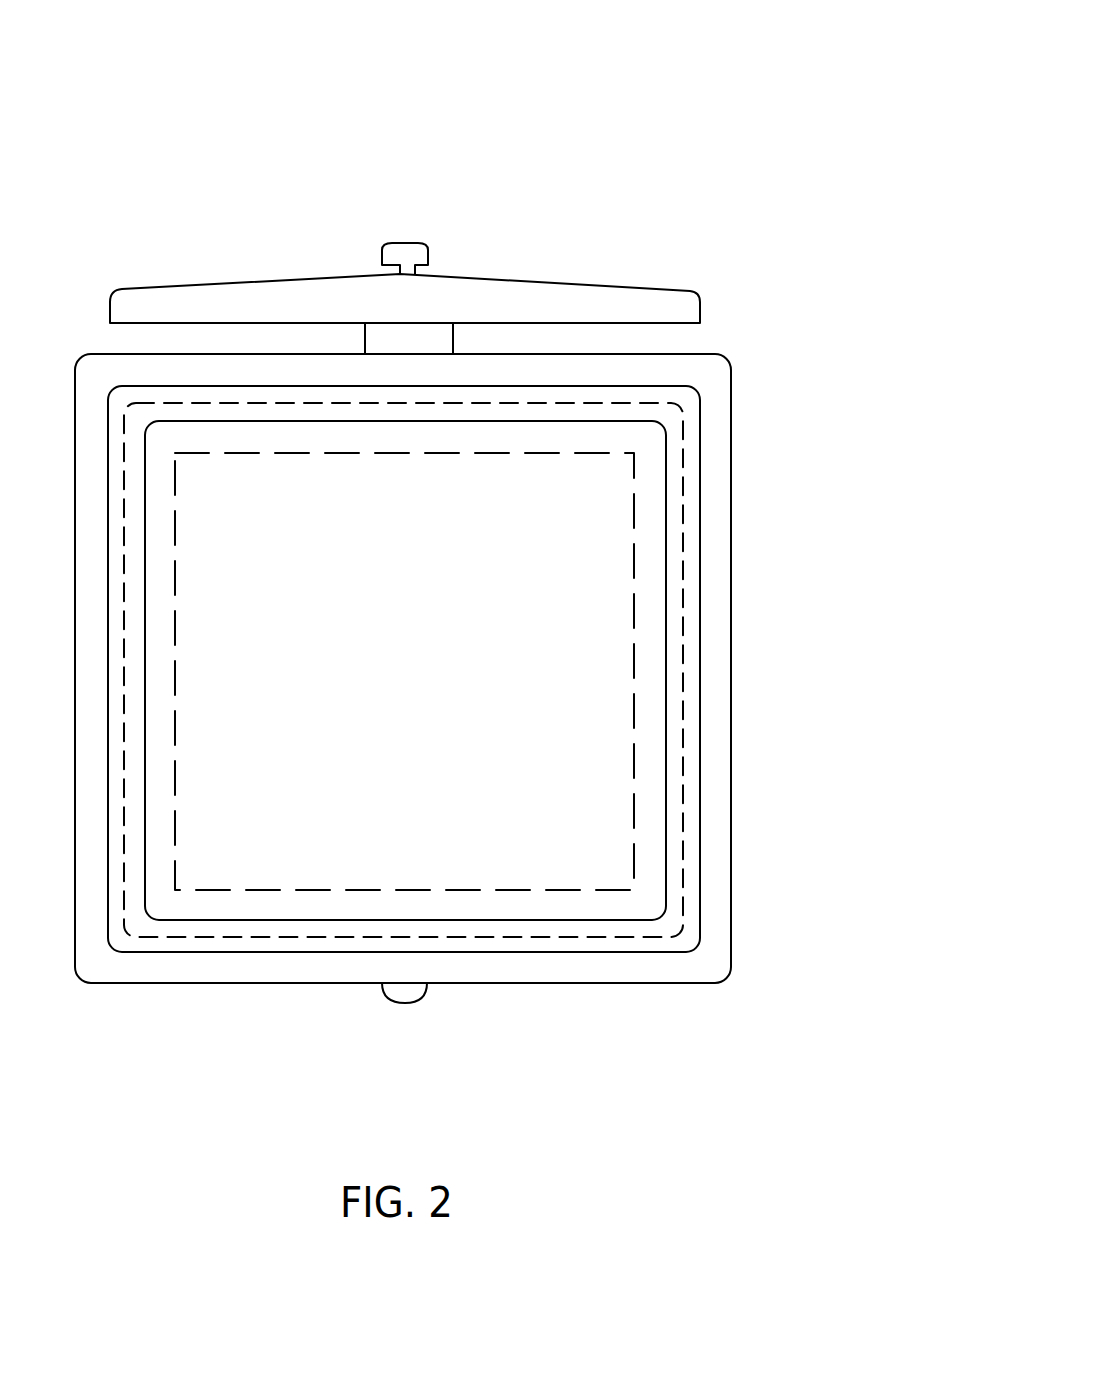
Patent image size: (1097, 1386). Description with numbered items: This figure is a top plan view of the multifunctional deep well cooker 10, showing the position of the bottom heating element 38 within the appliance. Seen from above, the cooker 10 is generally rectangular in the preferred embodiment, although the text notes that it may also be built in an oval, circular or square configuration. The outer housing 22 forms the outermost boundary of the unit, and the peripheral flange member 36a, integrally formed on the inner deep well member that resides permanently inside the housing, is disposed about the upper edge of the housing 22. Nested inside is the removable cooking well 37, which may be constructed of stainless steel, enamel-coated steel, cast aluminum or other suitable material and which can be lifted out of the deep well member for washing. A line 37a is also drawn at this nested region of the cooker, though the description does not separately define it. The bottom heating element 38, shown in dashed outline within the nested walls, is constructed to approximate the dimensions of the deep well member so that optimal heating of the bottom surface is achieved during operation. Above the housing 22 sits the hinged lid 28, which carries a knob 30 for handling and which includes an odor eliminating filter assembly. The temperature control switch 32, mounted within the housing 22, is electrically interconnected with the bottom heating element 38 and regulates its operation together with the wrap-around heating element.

The multifunctional deep well cooker 10 is at (611, 107).
The outer housing 22 is at (690, 790).
The hinged lid 28 is at (693, 303).
The knob 30 is at (420, 243).
The temperature control switch 32 is at (415, 995).
The peripheral flange member 36a is at (722, 468).
The removable cooking well 37 is at (405, 670).
The intermediate wall 37a is at (698, 583).
The bottom heating element 38 is at (575, 707).